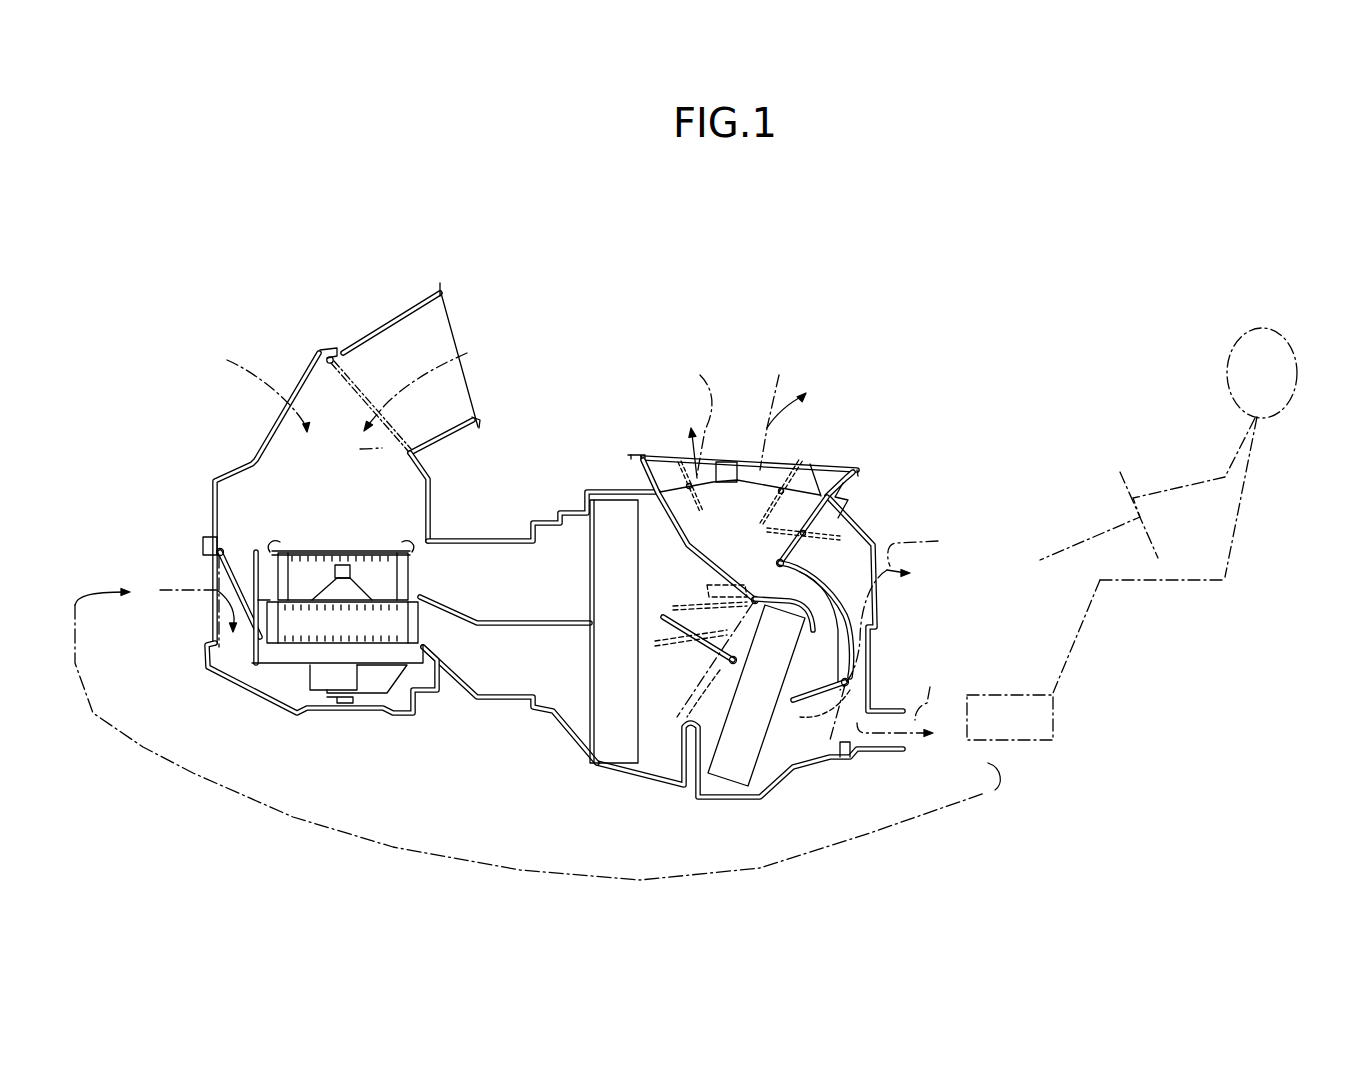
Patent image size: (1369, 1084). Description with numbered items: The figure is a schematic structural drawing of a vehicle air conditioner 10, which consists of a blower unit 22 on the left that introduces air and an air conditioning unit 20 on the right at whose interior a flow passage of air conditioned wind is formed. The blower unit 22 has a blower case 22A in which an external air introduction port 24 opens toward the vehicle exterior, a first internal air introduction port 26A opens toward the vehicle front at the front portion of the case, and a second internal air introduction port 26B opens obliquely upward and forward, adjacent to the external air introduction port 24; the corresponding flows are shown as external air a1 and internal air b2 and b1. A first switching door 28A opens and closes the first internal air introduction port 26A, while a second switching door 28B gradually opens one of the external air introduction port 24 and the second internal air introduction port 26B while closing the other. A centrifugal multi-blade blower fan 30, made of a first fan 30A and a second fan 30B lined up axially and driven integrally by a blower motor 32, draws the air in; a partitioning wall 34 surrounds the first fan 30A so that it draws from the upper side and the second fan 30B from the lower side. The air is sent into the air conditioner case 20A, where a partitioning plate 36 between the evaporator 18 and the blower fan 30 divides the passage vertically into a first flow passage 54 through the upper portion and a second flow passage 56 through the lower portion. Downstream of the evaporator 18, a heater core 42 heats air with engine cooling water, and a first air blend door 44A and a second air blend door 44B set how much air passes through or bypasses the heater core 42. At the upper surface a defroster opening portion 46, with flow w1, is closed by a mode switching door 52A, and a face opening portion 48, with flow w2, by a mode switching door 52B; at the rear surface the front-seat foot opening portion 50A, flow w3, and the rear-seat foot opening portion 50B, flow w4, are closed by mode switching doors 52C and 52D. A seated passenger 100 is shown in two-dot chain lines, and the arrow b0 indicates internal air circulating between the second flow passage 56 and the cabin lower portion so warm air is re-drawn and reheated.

The air conditioner 10 is at (906, 334).
The evaporator 18 is at (610, 765).
The air conditioning unit 20 is at (620, 476).
The air conditioner case 20A is at (570, 510).
The blower unit 22 is at (450, 507).
The blower case 22A is at (437, 497).
The external air introduction port 24 is at (433, 308).
The first internal air introduction port 26A is at (213, 633).
The second internal air introduction port 26B is at (258, 452).
The first switching door 28A is at (246, 598).
The second switching door 28B is at (320, 400).
The blower fan 30 is at (420, 583).
The first fan 30A is at (390, 571).
The second fan 30B is at (393, 624).
The blower motor 32 is at (310, 670).
The partitioning wall 34 is at (262, 540).
The partitioning plate 36 is at (547, 620).
The heater core 42 is at (730, 770).
The first air blend door 44A is at (750, 597).
The second air blend door 44B is at (748, 664).
The defroster opening portion 46 is at (692, 460).
The face opening portion 48 is at (754, 462).
The foot opening portion 50A is at (880, 608).
The foot opening portion 50B is at (903, 750).
The mode switching door 52A is at (700, 487).
The mode switching door 52B is at (817, 465).
The mode switching door 52C is at (833, 530).
The mode switching door 52D is at (884, 680).
The first flow passage 54 is at (547, 543).
The second flow passage 56 is at (514, 680).
The passenger 100 is at (1243, 545).
The flow of external air a1 is at (467, 353).
The internal air circulation flow b0 is at (437, 857).
The flow of internal air b1 is at (195, 545).
The flow of internal air b2 is at (252, 355).
The flow of air conditioned wind w1 is at (698, 414).
The flow of air conditioned wind w2 is at (783, 409).
The flow of air conditioned wind w3 is at (904, 608).
The flow of air conditioned wind w4 is at (901, 697).